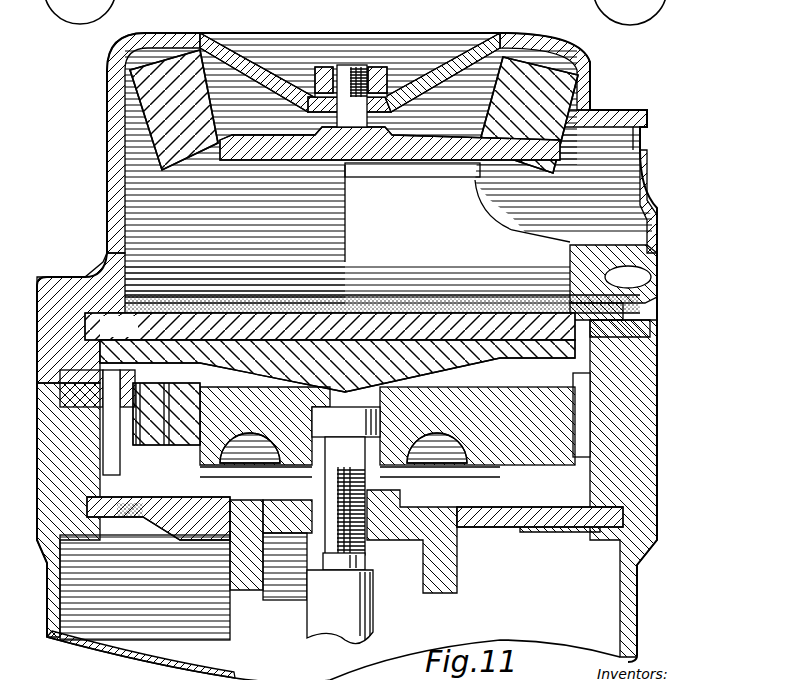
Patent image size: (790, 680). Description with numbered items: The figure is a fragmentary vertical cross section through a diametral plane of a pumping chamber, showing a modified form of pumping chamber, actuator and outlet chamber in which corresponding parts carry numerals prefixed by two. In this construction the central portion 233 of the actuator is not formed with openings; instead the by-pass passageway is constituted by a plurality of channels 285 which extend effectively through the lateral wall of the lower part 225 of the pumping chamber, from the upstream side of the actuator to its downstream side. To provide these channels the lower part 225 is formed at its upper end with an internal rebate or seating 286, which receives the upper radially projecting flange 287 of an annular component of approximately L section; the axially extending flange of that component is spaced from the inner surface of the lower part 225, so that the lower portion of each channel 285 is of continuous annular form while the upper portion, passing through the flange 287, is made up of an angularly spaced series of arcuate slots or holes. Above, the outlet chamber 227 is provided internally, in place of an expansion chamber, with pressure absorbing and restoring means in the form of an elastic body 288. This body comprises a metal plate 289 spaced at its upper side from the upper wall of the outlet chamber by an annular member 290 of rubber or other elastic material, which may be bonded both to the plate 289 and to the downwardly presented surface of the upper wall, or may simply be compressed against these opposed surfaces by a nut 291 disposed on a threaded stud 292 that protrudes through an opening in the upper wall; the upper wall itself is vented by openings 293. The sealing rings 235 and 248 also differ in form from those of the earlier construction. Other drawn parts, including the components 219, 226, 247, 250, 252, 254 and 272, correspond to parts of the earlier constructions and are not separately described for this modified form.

The cylindrical cavity 219 is at (88, 595).
The lower part of the pumping chamber 225 is at (640, 505).
The housing flange block 226 is at (613, 274).
The outlet chamber 227 is at (600, 107).
The central portion of the actuator 233 is at (453, 408).
The sealing ring 235 is at (210, 496).
The shaft 247 is at (318, 624).
The sealing ring 248 is at (404, 537).
The ring 250 is at (568, 367).
The ring 252 is at (560, 326).
The flange bar 254 is at (533, 530).
The flange step 272 is at (643, 105).
The channels 285 is at (138, 400).
The internal rebate or seating 286 is at (110, 465).
The upper radially projecting flange 287 is at (330, 326).
The elastic body 288 is at (125, 130).
The metal plate 289 is at (283, 158).
The annular member 290 is at (168, 62).
The nut 291 is at (392, 52).
The threaded stud 292 is at (351, 63).
The openings 293 is at (256, 66).